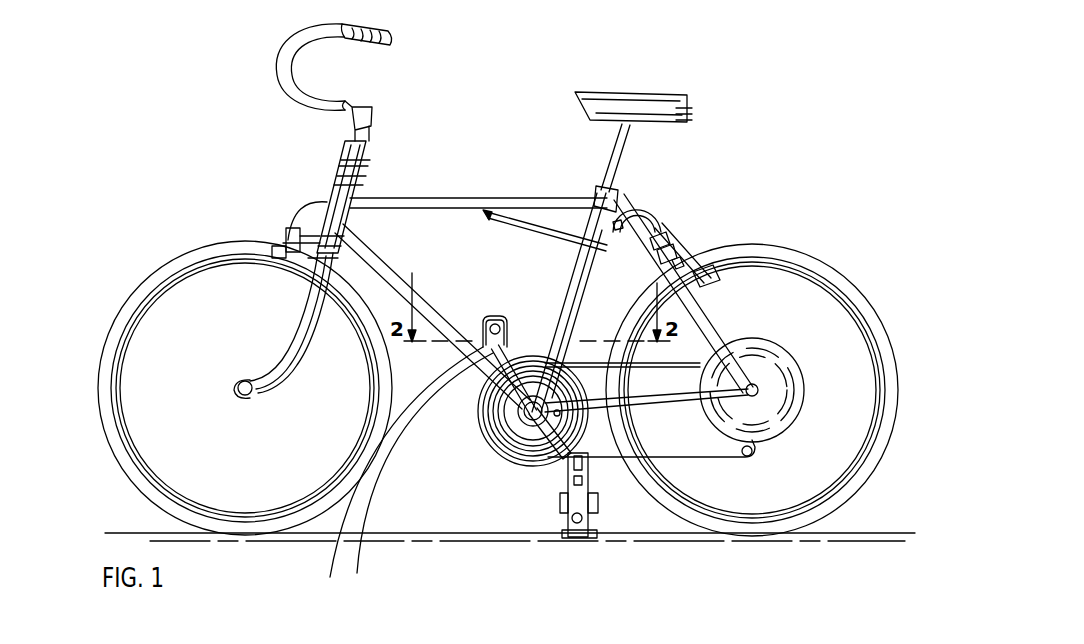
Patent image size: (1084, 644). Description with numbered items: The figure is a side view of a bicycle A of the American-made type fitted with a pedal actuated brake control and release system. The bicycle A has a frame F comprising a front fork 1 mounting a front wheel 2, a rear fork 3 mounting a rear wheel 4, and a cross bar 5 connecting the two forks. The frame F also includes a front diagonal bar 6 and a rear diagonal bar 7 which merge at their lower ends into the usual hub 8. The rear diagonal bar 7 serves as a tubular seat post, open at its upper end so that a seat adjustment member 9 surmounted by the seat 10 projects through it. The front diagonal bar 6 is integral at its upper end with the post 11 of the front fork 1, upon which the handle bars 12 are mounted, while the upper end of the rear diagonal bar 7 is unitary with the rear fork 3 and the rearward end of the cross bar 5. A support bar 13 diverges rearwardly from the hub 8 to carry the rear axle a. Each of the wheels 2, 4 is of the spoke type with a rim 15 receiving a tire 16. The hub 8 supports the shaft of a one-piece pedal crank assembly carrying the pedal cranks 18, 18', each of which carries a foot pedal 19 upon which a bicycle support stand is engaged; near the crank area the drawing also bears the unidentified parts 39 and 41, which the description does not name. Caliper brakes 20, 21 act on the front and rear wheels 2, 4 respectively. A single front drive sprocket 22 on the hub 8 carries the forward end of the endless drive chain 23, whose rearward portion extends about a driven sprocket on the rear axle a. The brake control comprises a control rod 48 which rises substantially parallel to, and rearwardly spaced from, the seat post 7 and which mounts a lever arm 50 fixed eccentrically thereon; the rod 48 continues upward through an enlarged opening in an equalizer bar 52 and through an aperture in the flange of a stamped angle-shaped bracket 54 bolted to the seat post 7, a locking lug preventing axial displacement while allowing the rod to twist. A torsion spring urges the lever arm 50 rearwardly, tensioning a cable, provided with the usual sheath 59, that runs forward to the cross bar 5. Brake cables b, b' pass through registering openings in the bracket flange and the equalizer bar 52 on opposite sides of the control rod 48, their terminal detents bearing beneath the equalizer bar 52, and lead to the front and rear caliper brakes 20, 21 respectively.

The front fork 1 is at (297, 313).
The front wheel 2 is at (152, 273).
The rear fork 3 is at (707, 327).
The rear wheel 4 is at (576, 524).
The cross bar 5 is at (403, 272).
The front diagonal bar 6 is at (435, 204).
The rear diagonal bar 7 is at (574, 284).
The hub 8 is at (500, 440).
The seat adjustment member 9 is at (632, 158).
The seat 10 is at (662, 90).
The post 11 is at (333, 180).
The handle bars 12 is at (279, 43).
The support bar 13 is at (672, 407).
The rim 15 is at (152, 300).
The tire 16 is at (117, 313).
The pedal crank 18 is at (517, 493).
The pedal crank 18' is at (411, 475).
The foot pedal 19 is at (560, 505).
The caliper brake 20 is at (287, 235).
The caliper brake 21 is at (714, 262).
The drive sprocket 22 is at (485, 420).
The drive chain 23 is at (703, 460).
The sprocket 39 is at (515, 455).
The pedal body 41 is at (592, 455).
The control rod 48 is at (692, 248).
The lever arm 50 is at (678, 238).
The equalizer bar 52 is at (660, 222).
The bracket 54 is at (652, 210).
The sheath 59 is at (568, 282).
The bicycle A is at (721, 152).
The frame F is at (544, 253).
The rear axle a is at (762, 385).
The brake cable b is at (687, 216).
The brake cable b' is at (641, 187).